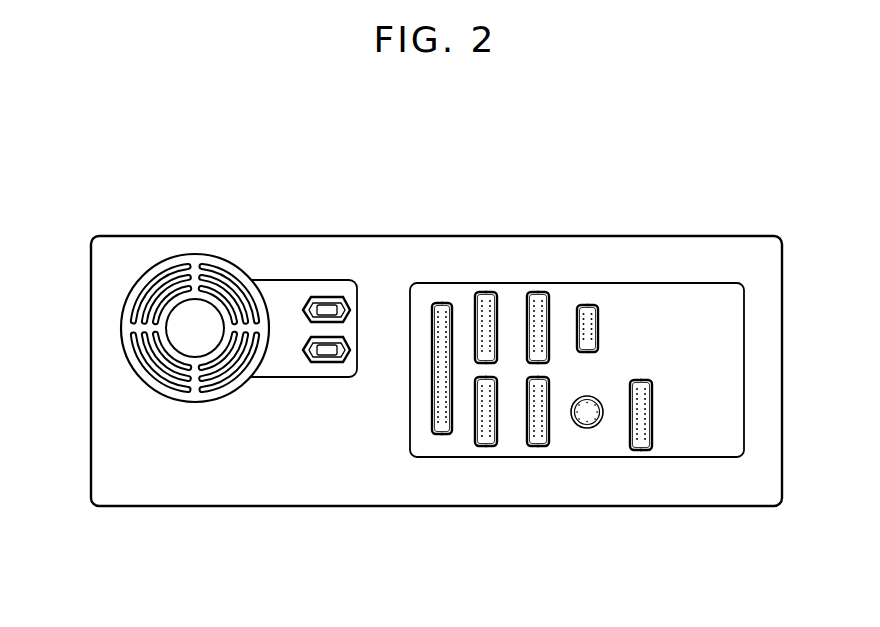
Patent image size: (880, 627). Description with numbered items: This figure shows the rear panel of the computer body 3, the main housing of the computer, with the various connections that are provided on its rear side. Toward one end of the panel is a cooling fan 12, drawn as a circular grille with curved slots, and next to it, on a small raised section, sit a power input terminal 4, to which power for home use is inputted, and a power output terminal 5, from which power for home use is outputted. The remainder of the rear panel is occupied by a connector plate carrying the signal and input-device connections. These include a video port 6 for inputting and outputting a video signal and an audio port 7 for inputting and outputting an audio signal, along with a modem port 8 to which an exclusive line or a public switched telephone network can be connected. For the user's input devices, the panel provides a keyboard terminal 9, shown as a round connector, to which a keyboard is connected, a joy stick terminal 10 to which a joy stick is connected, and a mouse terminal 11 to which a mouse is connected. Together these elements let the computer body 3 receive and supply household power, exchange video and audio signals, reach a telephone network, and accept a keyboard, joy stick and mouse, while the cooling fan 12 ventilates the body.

The computer body 3 is at (215, 208).
The power input terminal 4 is at (332, 297).
The power output terminal 5 is at (326, 360).
The video port 6 is at (533, 445).
The audio port 7 is at (640, 450).
The modem port 8 is at (483, 445).
The keyboard terminal 9 is at (584, 427).
The joy stick terminal 10 is at (485, 293).
The mouse terminal 11 is at (588, 305).
The cooling fan 12 is at (128, 323).